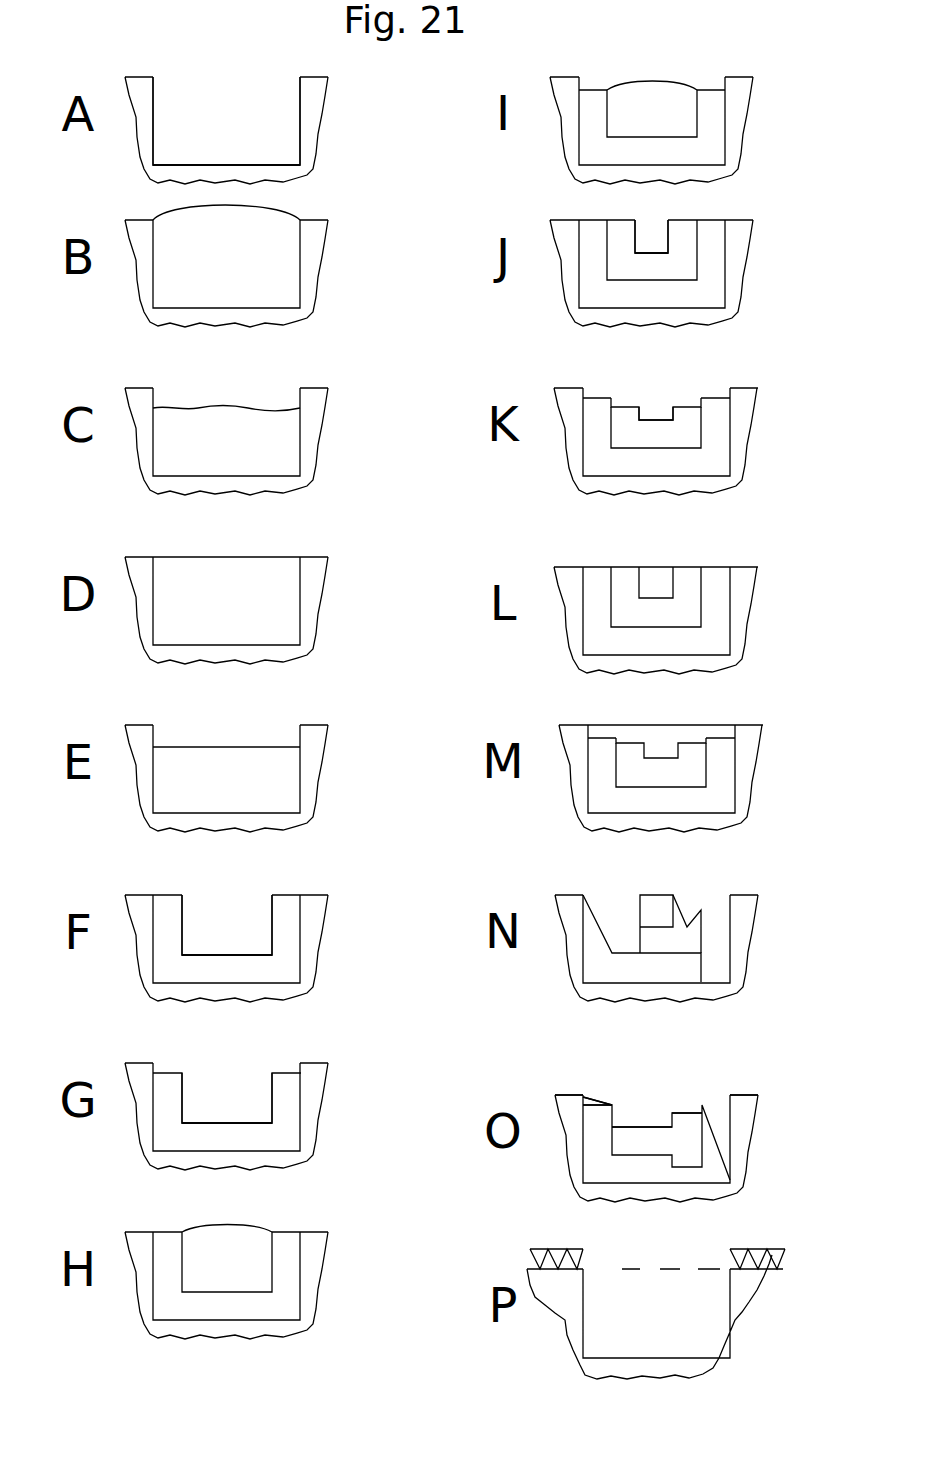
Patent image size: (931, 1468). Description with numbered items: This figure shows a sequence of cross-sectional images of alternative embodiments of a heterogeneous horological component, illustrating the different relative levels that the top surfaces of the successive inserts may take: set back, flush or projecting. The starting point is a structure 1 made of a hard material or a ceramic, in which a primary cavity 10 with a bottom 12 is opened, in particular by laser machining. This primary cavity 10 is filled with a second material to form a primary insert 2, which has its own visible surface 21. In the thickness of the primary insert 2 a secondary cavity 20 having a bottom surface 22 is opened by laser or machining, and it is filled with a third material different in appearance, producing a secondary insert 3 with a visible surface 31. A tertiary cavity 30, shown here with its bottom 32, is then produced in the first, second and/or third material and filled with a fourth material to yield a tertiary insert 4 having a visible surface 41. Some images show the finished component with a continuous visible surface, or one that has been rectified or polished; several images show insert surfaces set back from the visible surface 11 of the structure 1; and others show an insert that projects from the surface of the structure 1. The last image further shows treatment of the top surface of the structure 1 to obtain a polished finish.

The structure 1 is at (367, 1244).
The primary insert 2 is at (365, 1300).
The secondary insert 3 is at (247, 1250).
The tertiary insert 4 is at (650, 575).
The primary cavity 10 is at (209, 122).
The bottom 12 is at (258, 150).
The secondary cavity 20 is at (247, 1098).
The bottom surface 22 is at (197, 1108).
The tertiary cavity 30 is at (662, 395).
The bottom of recess in second layer 32 is at (648, 236).
The visible surface 11 is at (748, 1077).
The visible surface 21 is at (704, 1081).
The visible surface 31 is at (650, 1110).
The visible surface 41 is at (595, 1077).